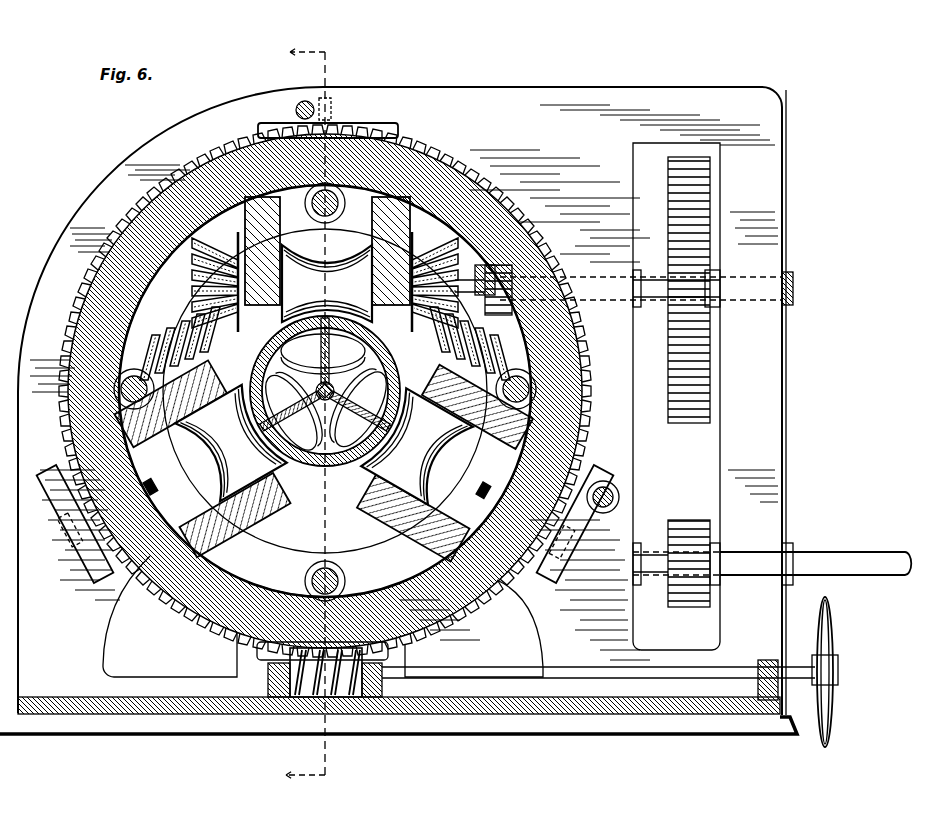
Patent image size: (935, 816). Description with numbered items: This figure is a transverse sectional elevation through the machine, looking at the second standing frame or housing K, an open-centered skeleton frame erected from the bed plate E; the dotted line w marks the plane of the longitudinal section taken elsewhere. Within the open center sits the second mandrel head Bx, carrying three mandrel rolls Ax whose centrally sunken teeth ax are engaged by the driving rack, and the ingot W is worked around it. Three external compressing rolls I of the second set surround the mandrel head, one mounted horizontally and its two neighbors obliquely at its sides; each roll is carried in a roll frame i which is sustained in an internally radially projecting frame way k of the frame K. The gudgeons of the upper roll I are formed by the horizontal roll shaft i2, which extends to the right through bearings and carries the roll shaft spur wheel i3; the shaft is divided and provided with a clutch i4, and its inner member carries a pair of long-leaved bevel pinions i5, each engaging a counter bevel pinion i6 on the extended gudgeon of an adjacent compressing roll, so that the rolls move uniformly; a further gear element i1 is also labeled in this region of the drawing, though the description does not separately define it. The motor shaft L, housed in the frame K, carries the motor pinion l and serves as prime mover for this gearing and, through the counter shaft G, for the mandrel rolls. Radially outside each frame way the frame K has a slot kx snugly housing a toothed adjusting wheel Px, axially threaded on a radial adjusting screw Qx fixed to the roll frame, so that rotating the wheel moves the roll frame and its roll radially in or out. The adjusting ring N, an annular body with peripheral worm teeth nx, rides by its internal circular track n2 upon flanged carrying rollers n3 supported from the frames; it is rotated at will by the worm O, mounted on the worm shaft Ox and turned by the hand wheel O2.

The housing or standing frame K is at (402, 401).
The bed plate E is at (142, 705).
The adjusting ring N is at (72, 322).
The worm teeth nx is at (200, 165).
The internal circular track n2 is at (192, 278).
The flanged carrying rollers n3 is at (312, 212).
The roll frame i is at (326, 380).
The radial adjusting screw Qx is at (152, 482).
The frame way k is at (323, 379).
The external compressing roll I is at (324, 375).
The ingot W is at (262, 340).
The mandrel roll Ax is at (326, 396).
The sunken teeth ax is at (321, 350).
The second mandrel head Bx is at (392, 370).
The long-leaved bevel pinion i5 is at (212, 243).
The counter bevel pinion i6 is at (150, 350).
The bevel gear i1 is at (440, 246).
The clutch i4 is at (496, 312).
The slot or opening kx is at (398, 124).
The toothed adjusting wheel Px is at (280, 125).
The counter shaft G is at (612, 488).
The roll shaft spur wheel i3 is at (672, 205).
The roll shaft i2 is at (795, 288).
The motor pinion l is at (676, 610).
The motor shaft L is at (820, 552).
The worm shaft Ox is at (560, 675).
The hand wheel O2 is at (833, 635).
The worm O is at (308, 693).
The section line w is at (315, 411).